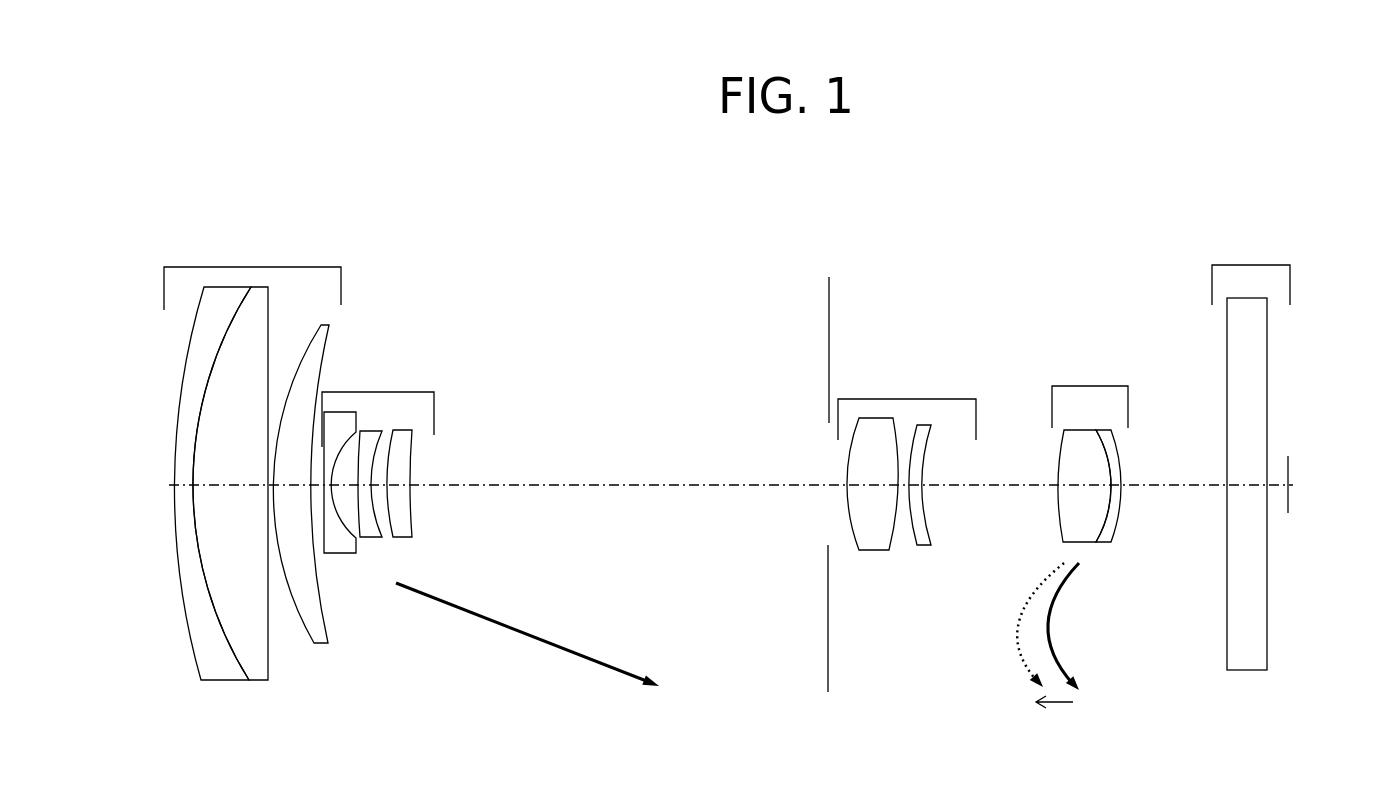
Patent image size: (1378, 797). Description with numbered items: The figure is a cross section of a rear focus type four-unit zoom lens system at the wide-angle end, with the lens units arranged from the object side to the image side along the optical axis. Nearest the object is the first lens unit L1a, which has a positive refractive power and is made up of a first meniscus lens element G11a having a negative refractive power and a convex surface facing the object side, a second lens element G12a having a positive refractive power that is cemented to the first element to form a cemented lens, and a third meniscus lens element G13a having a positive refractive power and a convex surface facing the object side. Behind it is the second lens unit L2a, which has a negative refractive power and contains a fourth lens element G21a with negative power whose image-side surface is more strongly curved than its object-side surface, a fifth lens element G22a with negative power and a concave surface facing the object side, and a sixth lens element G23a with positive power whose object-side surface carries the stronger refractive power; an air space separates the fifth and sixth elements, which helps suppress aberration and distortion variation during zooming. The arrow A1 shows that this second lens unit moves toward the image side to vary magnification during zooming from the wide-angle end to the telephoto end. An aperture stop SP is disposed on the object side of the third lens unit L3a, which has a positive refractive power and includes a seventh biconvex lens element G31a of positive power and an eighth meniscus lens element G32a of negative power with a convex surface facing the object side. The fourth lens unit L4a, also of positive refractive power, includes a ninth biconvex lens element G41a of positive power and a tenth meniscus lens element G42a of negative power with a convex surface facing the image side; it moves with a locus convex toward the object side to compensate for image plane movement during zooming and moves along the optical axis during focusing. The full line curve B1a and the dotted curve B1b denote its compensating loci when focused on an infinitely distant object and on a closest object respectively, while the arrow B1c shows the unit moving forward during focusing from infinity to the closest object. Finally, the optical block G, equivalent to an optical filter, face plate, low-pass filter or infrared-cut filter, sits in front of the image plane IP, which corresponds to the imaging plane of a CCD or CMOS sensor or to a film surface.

The first lens unit L1a is at (256, 455).
The first meniscus lens element G11a is at (196, 325).
The second lens element G12a is at (258, 313).
The third meniscus lens element G13a is at (326, 333).
The second lens unit L2a is at (421, 456).
The fourth lens element G21a is at (340, 425).
The fifth lens element G22a is at (372, 442).
The sixth lens element G23a is at (400, 462).
The arrow A1 is at (527, 634).
The aperture stop SP is at (828, 318).
The third lens unit L3a is at (888, 458).
The seventh biconvex lens element G31a is at (850, 460).
The eighth meniscus lens element G32a is at (925, 448).
The fourth lens unit L4a is at (1091, 448).
The ninth biconvex lens element G41a is at (1063, 502).
The tenth meniscus lens element G42a is at (1113, 505).
The optical block G is at (1251, 451).
The image plane IP is at (1288, 465).
The full line curve B1a is at (1048, 627).
The dotted curve B1b is at (1017, 627).
The arrow B1c is at (1057, 702).